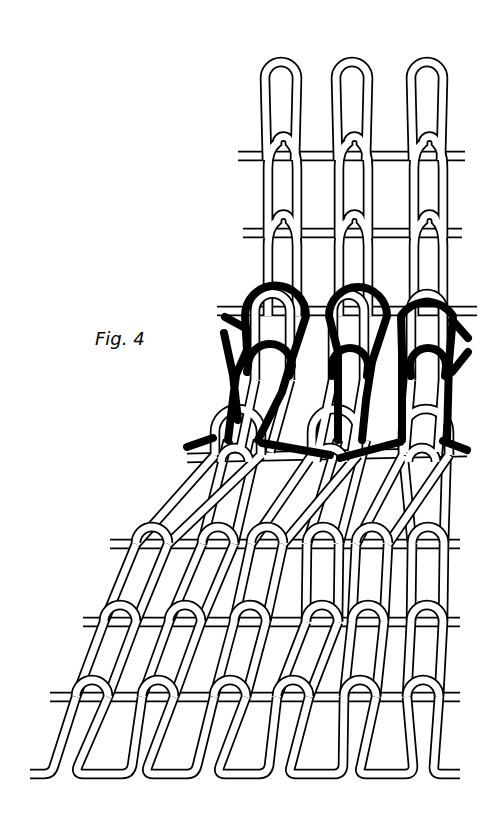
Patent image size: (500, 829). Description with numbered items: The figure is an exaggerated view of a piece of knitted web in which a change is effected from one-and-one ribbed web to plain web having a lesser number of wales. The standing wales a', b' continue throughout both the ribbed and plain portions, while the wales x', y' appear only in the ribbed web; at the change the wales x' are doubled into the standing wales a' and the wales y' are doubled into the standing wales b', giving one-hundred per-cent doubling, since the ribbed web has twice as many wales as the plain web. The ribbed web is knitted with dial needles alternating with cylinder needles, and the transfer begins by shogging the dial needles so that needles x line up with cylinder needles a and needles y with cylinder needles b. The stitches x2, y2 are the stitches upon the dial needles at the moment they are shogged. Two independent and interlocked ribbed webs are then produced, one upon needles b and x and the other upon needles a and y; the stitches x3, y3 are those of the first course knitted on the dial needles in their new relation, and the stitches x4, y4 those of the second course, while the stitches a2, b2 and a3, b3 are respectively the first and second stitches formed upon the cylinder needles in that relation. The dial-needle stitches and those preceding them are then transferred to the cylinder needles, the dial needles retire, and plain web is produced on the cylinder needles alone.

The standing wale a' is at (260, 420).
The standing wale b' is at (293, 420).
The rib wale x' is at (192, 751).
The rib wale y' is at (180, 751).
The first stitch on needle a a2 is at (232, 394).
The first stitch on needle b b2 is at (364, 418).
The second stitch on needle a a3 is at (252, 299).
The second stitch on needle b b3 is at (378, 293).
The stitch on needle x at shogging x2 is at (203, 484).
The stitch on needle y at shogging y2 is at (291, 486).
The first-course stitch on needle x x3 is at (346, 374).
The first-course stitch on needle y y3 is at (350, 375).
The second-course stitch on needle x x4 is at (349, 337).
The second-course stitch on needle y y4 is at (348, 338).